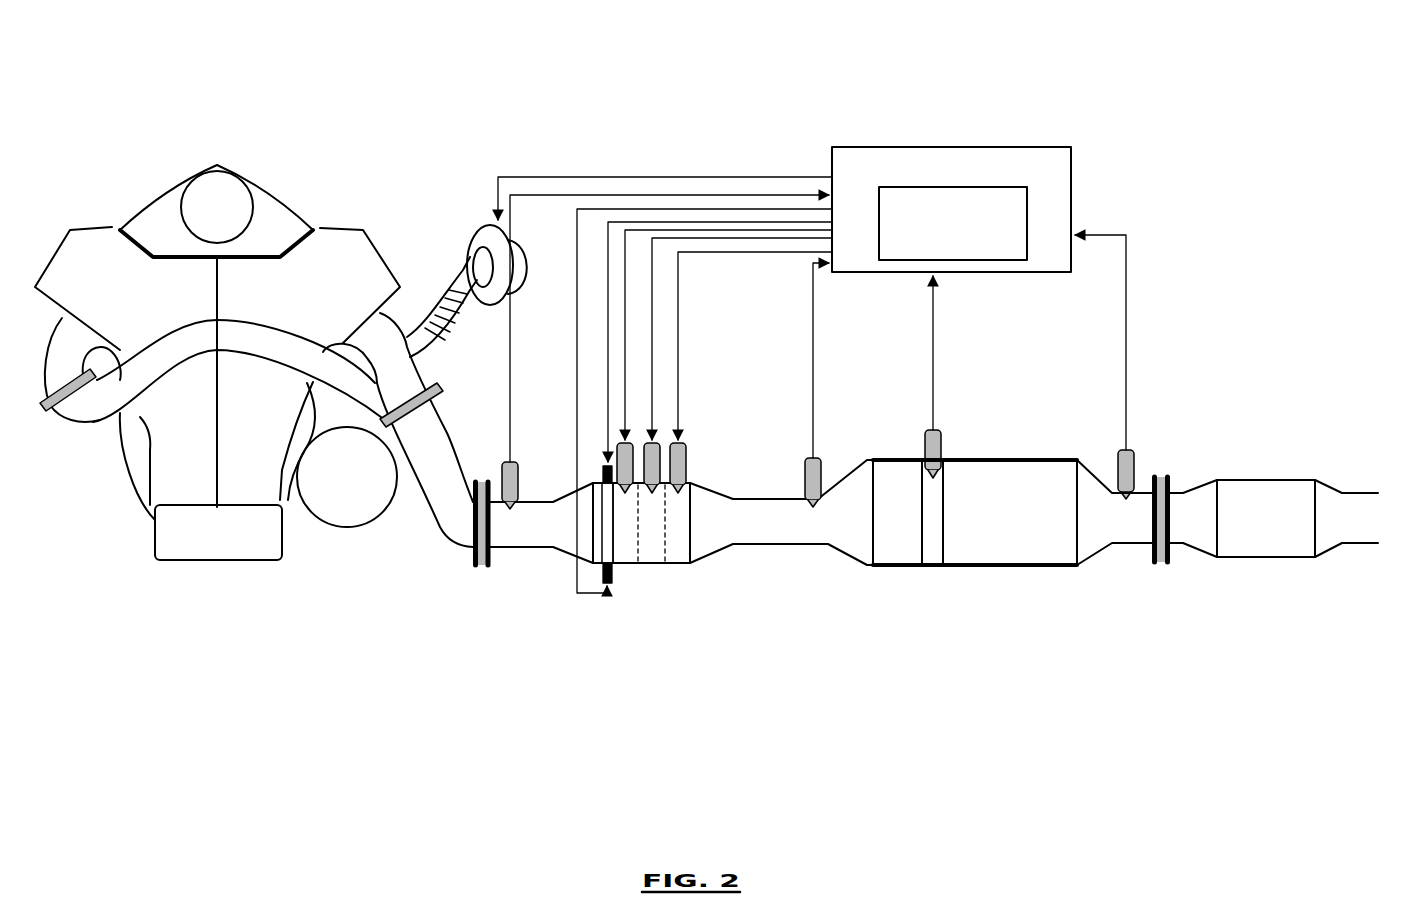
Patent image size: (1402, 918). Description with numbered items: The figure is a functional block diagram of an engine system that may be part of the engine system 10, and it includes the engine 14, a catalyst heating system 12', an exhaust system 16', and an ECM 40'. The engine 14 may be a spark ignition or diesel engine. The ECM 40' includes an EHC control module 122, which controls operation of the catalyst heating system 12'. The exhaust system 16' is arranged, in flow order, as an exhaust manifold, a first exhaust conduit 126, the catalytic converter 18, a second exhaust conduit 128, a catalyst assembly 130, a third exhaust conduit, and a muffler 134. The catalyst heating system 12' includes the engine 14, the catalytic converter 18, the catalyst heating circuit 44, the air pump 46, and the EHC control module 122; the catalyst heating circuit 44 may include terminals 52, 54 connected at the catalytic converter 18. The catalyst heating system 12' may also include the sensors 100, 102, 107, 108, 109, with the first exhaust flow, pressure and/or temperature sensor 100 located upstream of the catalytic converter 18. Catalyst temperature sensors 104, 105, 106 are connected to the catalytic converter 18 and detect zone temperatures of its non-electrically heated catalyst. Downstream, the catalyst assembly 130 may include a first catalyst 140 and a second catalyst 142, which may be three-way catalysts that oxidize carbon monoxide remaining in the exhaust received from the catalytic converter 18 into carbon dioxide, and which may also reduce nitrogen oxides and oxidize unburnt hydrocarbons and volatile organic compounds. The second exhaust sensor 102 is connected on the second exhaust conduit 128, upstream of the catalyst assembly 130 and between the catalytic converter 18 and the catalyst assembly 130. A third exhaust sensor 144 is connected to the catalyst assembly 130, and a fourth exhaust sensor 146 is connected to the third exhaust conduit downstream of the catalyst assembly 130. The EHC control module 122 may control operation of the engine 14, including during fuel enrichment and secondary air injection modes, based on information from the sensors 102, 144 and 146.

The engine system 10 is at (122, 86).
The catalyst heating system 12' is at (1090, 103).
The engine 14 is at (108, 226).
The exhaust system 16' is at (418, 665).
The catalytic converter 18 is at (692, 565).
The engine control module 40' is at (951, 182).
The catalyst heating circuit 44 is at (562, 373).
The air pump 46 is at (470, 237).
The terminal 52 is at (604, 466).
The terminal 54 is at (605, 568).
The first exhaust flow, pressure and/or temperature sensor 100 is at (507, 466).
The second exhaust flow, pressure and/or temperature sensor 102 is at (806, 463).
The catalyst temperature sensor 104 is at (622, 557).
The catalyst temperature sensor 105 is at (652, 557).
The catalyst temperature sensor 106 is at (682, 557).
The sensor 107 is at (630, 443).
The sensor 108 is at (658, 443).
The sensor 109 is at (684, 443).
The EHC control module 122 is at (893, 187).
The first exhaust conduit 126 is at (553, 549).
The second exhaust conduit 128 is at (775, 547).
The catalyst assembly 130 is at (1008, 460).
The muffler 134 is at (1265, 480).
The first catalyst 140 is at (872, 537).
The second catalyst 142 is at (1035, 545).
The third flow, pressure and/or temperature exhaust sensor 144 is at (922, 445).
The fourth flow, pressure and/or temperature exhaust sensor 146 is at (1120, 450).